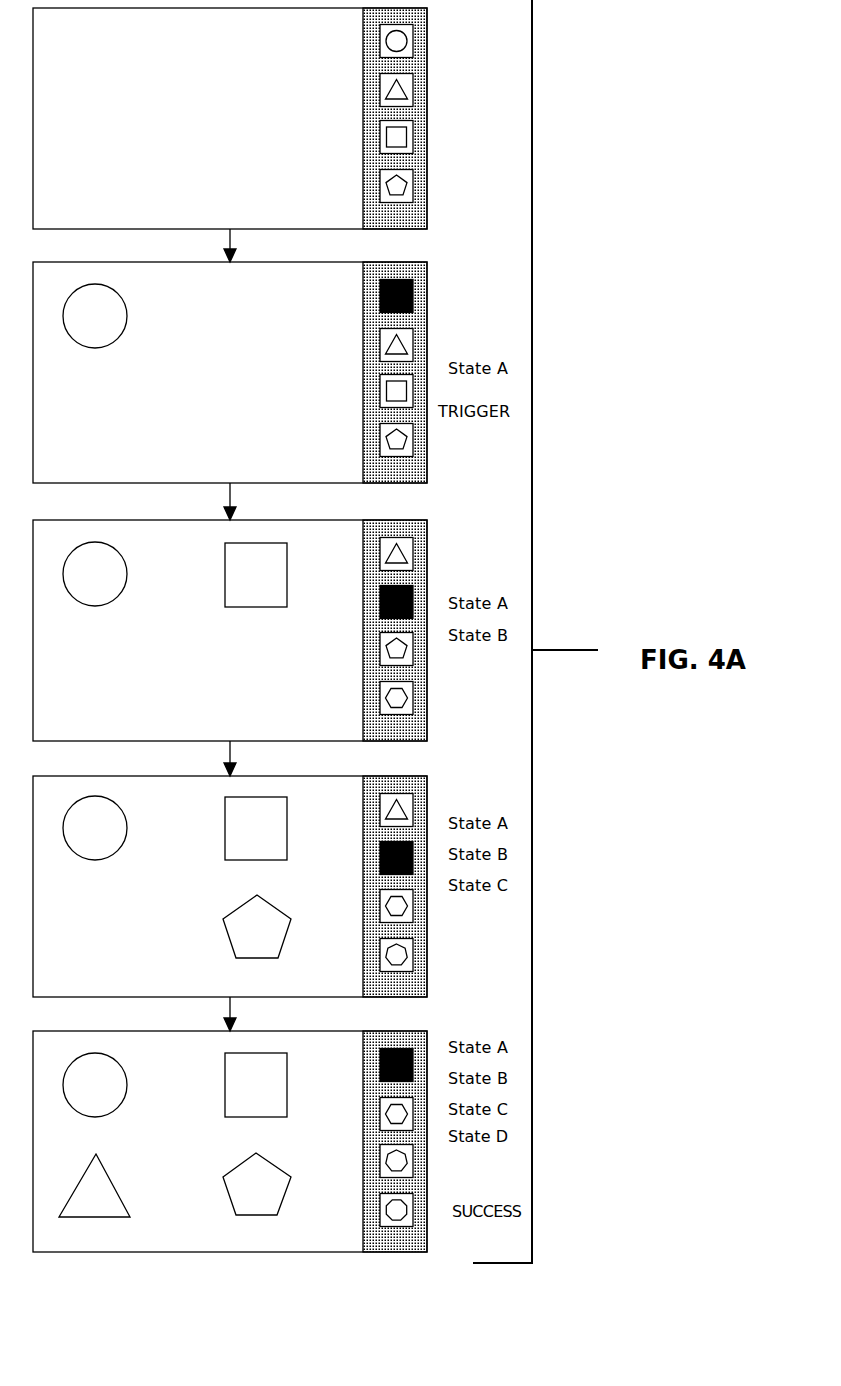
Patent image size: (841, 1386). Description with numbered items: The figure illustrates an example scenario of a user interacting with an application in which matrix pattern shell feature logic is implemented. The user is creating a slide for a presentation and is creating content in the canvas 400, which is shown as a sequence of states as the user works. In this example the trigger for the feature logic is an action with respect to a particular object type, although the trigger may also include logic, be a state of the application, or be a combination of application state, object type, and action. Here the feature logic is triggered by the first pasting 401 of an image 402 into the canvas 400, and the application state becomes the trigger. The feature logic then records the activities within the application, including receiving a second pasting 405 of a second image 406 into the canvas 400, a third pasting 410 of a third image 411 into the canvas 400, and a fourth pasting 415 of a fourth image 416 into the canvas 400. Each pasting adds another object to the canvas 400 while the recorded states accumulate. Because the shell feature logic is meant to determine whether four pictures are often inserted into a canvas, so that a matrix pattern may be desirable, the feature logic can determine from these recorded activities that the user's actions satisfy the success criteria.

The canvas 400 is at (104, 48).
The first pasting 401 is at (363, 299).
The image 402 is at (82, 346).
The second pasting 405 is at (260, 575).
The second image 406 is at (225, 583).
The third pasting 410 is at (257, 930).
The third image 411 is at (224, 928).
The fourth pasting 415 is at (363, 1068).
The fourth image 416 is at (110, 1217).